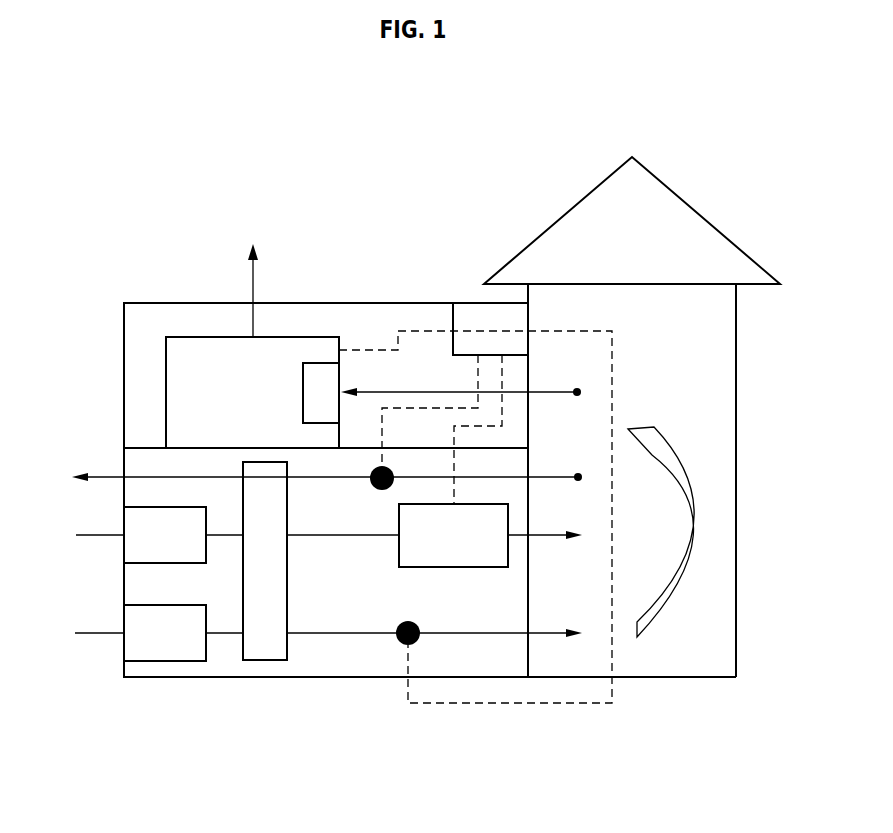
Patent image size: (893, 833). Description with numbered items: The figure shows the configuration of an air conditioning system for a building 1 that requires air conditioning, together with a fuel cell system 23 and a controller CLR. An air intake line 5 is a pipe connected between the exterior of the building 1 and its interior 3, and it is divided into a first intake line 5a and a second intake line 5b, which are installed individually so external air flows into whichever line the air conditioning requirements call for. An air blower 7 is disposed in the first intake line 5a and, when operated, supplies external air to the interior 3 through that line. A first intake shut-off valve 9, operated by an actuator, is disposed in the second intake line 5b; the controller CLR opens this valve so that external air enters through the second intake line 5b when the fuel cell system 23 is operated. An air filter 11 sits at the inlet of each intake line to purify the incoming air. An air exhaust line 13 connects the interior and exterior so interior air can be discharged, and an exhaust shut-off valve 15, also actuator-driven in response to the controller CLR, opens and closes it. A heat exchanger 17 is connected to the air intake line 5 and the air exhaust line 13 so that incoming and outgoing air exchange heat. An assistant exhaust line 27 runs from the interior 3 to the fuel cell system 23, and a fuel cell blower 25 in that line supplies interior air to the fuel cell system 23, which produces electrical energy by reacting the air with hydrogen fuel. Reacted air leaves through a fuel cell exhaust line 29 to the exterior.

The building 1 is at (722, 198).
The interior 3 is at (686, 397).
The air intake line 5 is at (328, 654).
The first intake line 5a is at (327, 537).
The second intake line 5b is at (343, 635).
The air blower 7 is at (495, 567).
The first intake shut-off valve 9 is at (413, 644).
The air filter 11 is at (129, 554).
The air exhaust line 13 is at (110, 477).
The exhaust shut-off valve 15 is at (380, 466).
The heat exchanger 17 is at (258, 652).
The fuel cell system 23 is at (172, 365).
The fuel cell blower 25 is at (317, 368).
The assistant exhaust line 27 is at (425, 392).
The fuel cell exhaust line 29 is at (252, 278).
The controller CLR is at (467, 308).